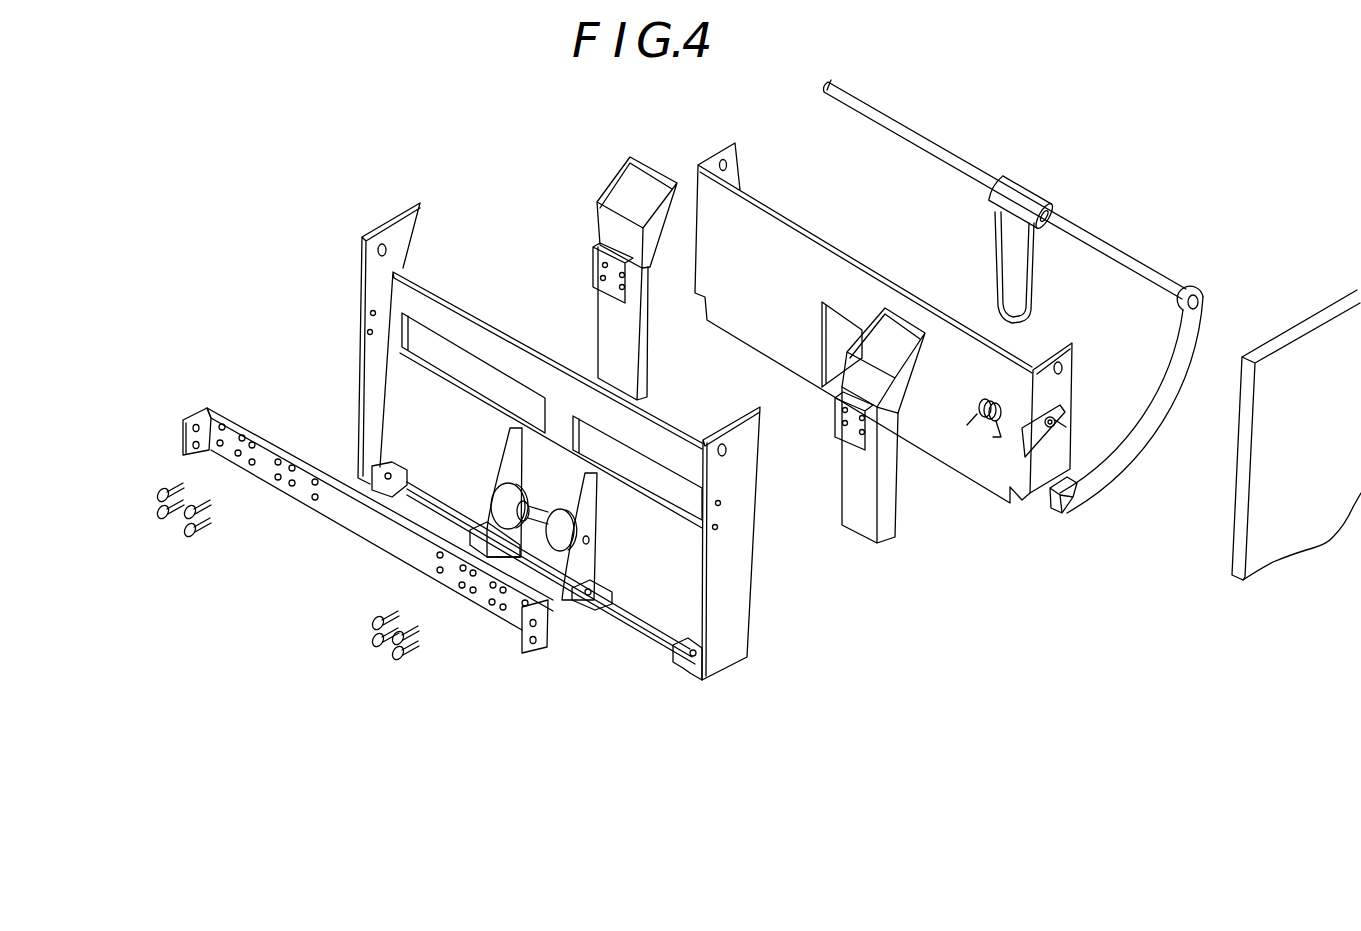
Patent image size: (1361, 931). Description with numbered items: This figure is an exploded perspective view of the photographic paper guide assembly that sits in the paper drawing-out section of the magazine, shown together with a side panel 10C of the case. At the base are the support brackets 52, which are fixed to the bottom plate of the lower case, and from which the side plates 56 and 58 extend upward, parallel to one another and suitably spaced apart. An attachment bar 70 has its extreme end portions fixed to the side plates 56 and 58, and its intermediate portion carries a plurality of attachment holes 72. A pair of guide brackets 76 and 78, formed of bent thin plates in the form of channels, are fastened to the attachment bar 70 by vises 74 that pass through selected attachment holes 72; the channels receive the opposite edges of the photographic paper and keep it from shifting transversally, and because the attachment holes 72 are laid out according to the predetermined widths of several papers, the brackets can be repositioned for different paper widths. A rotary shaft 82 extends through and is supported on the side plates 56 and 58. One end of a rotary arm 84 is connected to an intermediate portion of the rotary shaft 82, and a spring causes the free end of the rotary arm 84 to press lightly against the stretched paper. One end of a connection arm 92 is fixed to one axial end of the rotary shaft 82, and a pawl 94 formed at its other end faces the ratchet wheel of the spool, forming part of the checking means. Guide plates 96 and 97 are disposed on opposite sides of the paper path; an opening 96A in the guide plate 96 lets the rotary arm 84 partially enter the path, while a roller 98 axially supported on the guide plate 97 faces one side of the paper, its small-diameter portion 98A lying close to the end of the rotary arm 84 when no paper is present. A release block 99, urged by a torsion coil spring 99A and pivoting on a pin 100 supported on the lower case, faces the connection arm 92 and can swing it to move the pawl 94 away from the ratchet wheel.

The side panel 10C is at (1237, 455).
The support bracket 52 is at (652, 642).
The side plate 56 is at (742, 582).
The side plate 58 is at (368, 369).
The attachment bar 70 is at (372, 537).
The attachment holes 72 is at (313, 498).
The vises 74 is at (200, 532).
The guide bracket 76 is at (870, 477).
The guide bracket 78 is at (610, 320).
The rotary shaft 82 is at (1080, 225).
The rotary arm 84 is at (1032, 300).
The connection arm 92 is at (1108, 493).
The pawl 94 is at (1050, 488).
The guide plate 96 is at (843, 273).
The opening 96A is at (827, 337).
The guide plate 97 is at (650, 442).
The roller 98 is at (570, 518).
The small-diameter portion 98A is at (553, 507).
The release block 99 is at (1065, 405).
The torsion coil spring 99A is at (967, 413).
The pin 100 is at (1060, 430).